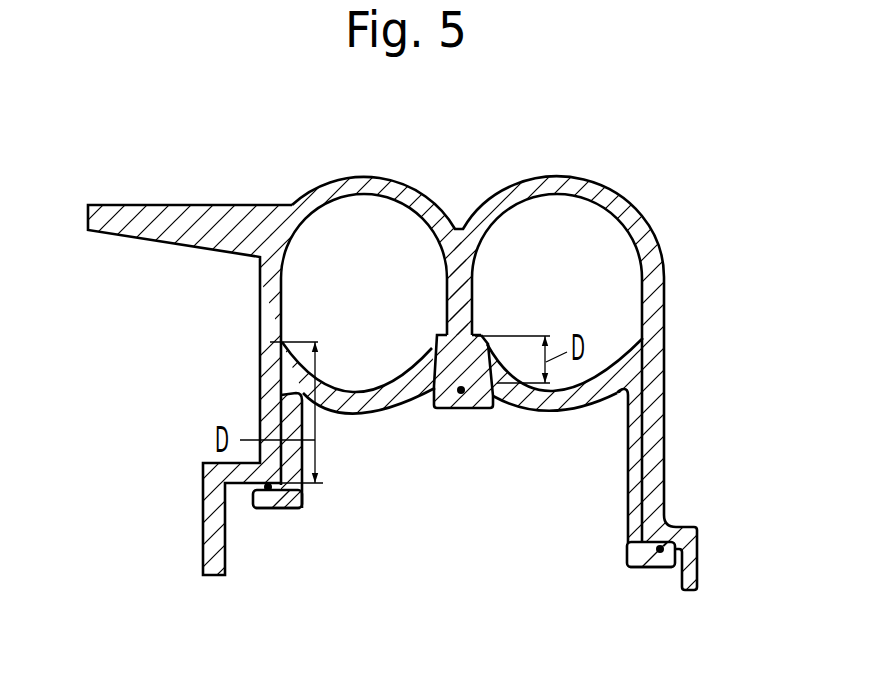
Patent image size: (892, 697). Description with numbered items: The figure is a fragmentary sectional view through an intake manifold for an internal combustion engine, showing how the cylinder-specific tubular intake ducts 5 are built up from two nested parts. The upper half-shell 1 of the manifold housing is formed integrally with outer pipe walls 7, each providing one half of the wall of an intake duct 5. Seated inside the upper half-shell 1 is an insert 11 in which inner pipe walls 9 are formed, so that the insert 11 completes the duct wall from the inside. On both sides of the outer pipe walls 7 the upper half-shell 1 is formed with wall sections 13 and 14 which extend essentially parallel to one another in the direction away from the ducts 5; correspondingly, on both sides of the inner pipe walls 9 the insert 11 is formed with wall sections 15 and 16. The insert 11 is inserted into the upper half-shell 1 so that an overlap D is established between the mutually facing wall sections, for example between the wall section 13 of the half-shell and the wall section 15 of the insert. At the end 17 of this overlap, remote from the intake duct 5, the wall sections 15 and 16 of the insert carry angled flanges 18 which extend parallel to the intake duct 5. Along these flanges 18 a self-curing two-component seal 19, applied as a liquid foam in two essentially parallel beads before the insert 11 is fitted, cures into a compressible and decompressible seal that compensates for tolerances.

The upper half-shell 1 is at (653, 232).
The intake duct 5 is at (322, 268).
The outer pipe wall 7 is at (350, 212).
The inner pipe wall 9 is at (365, 378).
The insert 11 is at (553, 393).
The wall section 13 is at (273, 368).
The wall section 14 is at (452, 333).
The wall section 15 is at (296, 411).
The wall section 16 is at (435, 397).
The end of the overlap 17 is at (299, 511).
The angled flange 18 is at (446, 412).
The seal 19 is at (461, 394).